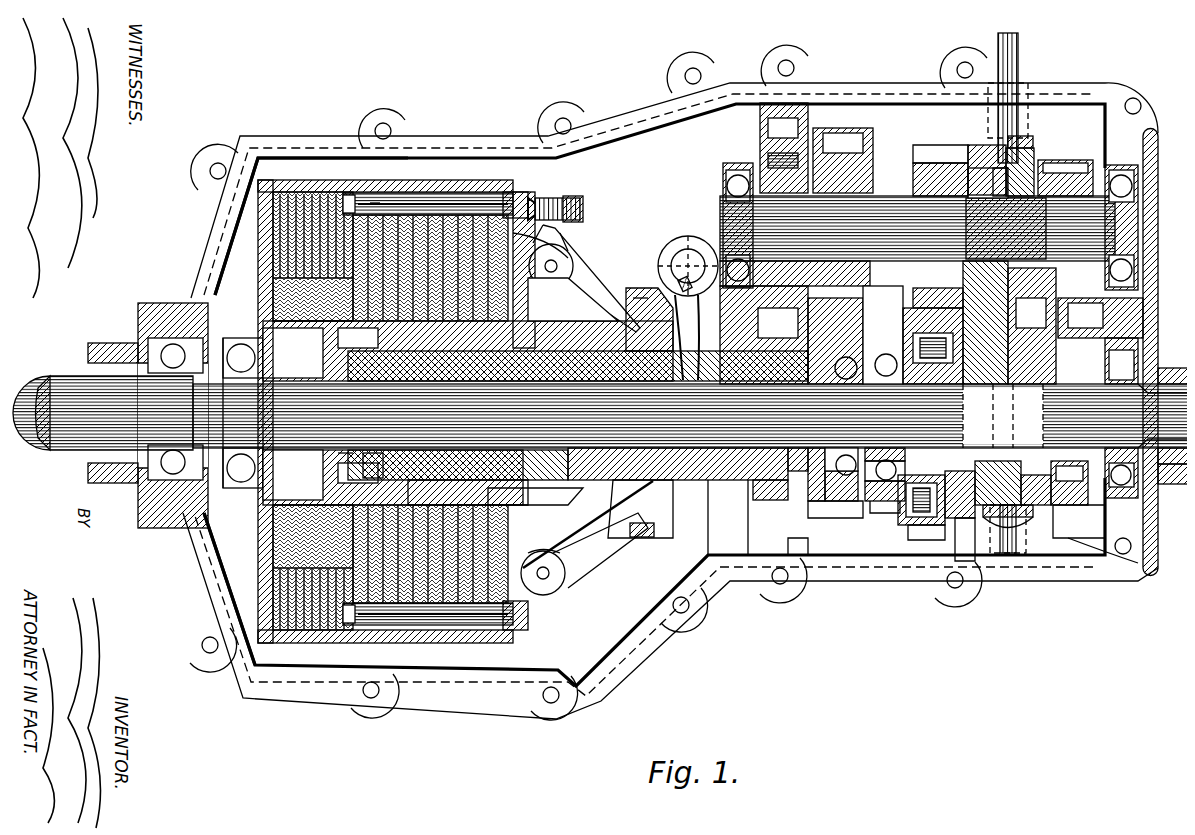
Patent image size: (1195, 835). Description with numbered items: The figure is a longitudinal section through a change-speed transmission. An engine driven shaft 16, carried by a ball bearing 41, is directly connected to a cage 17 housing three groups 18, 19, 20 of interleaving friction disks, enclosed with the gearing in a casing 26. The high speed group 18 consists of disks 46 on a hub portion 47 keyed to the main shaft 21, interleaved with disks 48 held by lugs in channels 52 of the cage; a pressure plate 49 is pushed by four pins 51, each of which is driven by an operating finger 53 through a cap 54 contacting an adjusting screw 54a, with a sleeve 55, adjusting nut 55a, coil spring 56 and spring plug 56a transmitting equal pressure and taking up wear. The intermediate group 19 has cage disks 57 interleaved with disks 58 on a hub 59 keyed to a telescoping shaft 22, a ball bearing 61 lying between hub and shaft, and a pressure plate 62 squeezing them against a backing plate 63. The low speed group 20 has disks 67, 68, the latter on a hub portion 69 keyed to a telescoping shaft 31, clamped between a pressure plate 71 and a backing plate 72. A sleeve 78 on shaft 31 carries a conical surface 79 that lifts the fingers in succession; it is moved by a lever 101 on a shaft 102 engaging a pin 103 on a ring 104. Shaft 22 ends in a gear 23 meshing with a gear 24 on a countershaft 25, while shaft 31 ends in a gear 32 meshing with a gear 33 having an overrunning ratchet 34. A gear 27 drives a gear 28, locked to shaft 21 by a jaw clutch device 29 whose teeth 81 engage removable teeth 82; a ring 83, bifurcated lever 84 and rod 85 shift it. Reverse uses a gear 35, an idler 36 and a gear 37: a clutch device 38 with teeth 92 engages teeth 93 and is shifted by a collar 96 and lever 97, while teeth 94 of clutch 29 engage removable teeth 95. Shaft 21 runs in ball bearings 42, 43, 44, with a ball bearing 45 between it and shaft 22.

The motor or engine driven shaft 16 is at (68, 380).
The cage 17 is at (250, 545).
The high speed clutch disk group 18 is at (290, 625).
The intermediate clutch disk group 19 is at (360, 625).
The low speed clutch disk group 20 is at (448, 625).
The main shaft 21 is at (690, 416).
The telescoping shaft 22 is at (687, 442).
The gear 23 is at (840, 462).
The gear 24 is at (833, 125).
The shaft 25 is at (917, 214).
The casing 26 is at (199, 228).
The gear 27 is at (925, 145).
The gear 28 is at (925, 520).
The jaw clutch device 29 is at (1035, 535).
The telescoping shaft 31 is at (718, 552).
The gear 32 is at (760, 478).
The gear 33 is at (768, 100).
The overrunning device or ratchet 34 is at (760, 157).
The gear 35 is at (1078, 163).
The idler 36 is at (1152, 330).
The gear 37 is at (1068, 310).
The jaw clutch device 38 is at (1012, 160).
The ball bearing 41 is at (165, 348).
The ball bearing 42 is at (233, 350).
The ball bearing 43 is at (878, 464).
The ball bearing 44 is at (1118, 472).
The ball bearing 45 is at (793, 575).
The circular disks 46 is at (252, 558).
The hub portion 47 is at (535, 413).
The disks 48 is at (262, 615).
The pressure plate 49 is at (342, 185).
The pins 51 is at (420, 200).
The channels 52 is at (480, 190).
The operating finger 53 is at (560, 232).
The cap or plug 54 is at (548, 195).
The adjusting screw 54a is at (560, 195).
The sleeve 55 is at (530, 190).
The adjusting nut 55a is at (545, 228).
The coil spring 56 is at (360, 190).
The spring plug 56a is at (368, 200).
The disks 57 is at (333, 230).
The interleaving disks 58 is at (337, 253).
The hub 59 is at (357, 457).
The ball bearing 61 is at (343, 450).
The pressure plate 62 is at (475, 182).
The backing plate 63 is at (347, 257).
The disks 67 is at (510, 290).
The disks 68 is at (480, 503).
The hub portion 69 is at (468, 494).
The pressure plate 71 is at (472, 625).
The backing plate 72 is at (415, 630).
The sleeve 78 is at (560, 555).
The conical surface 79 is at (557, 565).
The teeth 81 is at (965, 555).
The removable teeth 82 is at (940, 545).
The ring 83 is at (995, 570).
The bifurcated lever 84 is at (1010, 548).
The rod 85 is at (1012, 38).
The teeth 92 is at (1005, 157).
The teeth 93 is at (1042, 160).
The teeth 94 is at (1060, 548).
The removable teeth 95 is at (1105, 548).
The rotatable collar 96 is at (978, 140).
The lever 97 is at (995, 133).
The lever 101 is at (675, 300).
The shaft 102 is at (680, 258).
The pin 103 is at (672, 318).
The ring 104 is at (632, 530).